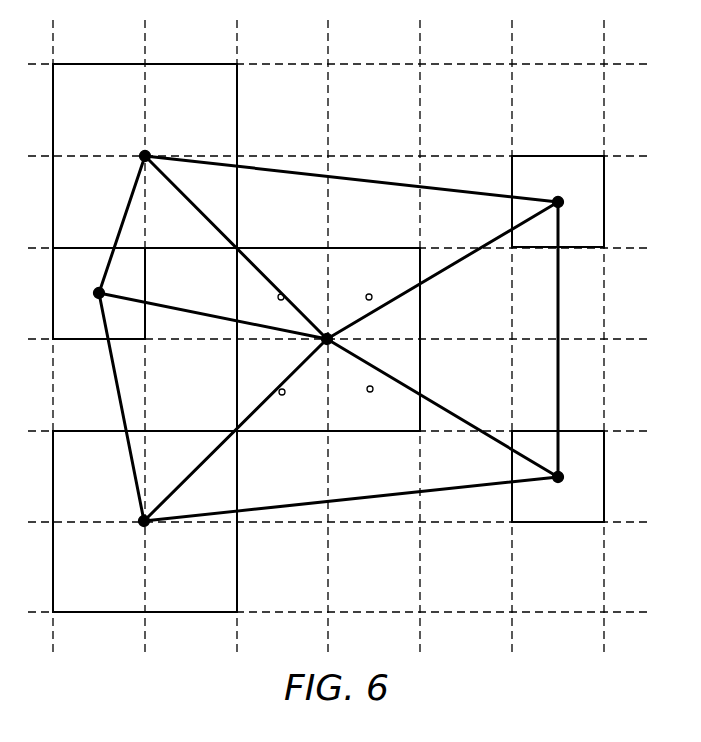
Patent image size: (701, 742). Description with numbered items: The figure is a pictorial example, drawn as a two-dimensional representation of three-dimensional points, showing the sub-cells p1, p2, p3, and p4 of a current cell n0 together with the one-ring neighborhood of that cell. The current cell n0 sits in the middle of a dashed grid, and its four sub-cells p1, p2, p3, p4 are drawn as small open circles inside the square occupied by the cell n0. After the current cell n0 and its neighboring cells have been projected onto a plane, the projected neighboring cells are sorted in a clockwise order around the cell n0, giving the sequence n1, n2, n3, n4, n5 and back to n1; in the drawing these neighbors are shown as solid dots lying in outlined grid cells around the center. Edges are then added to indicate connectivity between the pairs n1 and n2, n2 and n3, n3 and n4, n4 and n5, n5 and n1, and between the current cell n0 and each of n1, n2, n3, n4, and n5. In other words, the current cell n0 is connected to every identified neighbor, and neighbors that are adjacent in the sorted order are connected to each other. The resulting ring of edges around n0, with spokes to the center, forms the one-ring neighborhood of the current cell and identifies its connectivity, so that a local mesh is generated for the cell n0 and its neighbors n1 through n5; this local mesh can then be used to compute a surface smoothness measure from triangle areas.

The current cell n0 is at (344, 359).
The neighboring cell n1 is at (164, 136).
The neighboring cell n2 is at (574, 189).
The neighboring cell n3 is at (576, 492).
The neighboring cell n4 is at (161, 539).
The neighboring cell n5 is at (82, 274).
The sub-cell p1 is at (300, 277).
The sub-cell p2 is at (381, 276).
The sub-cell p3 is at (386, 400).
The sub-cell p4 is at (269, 367).